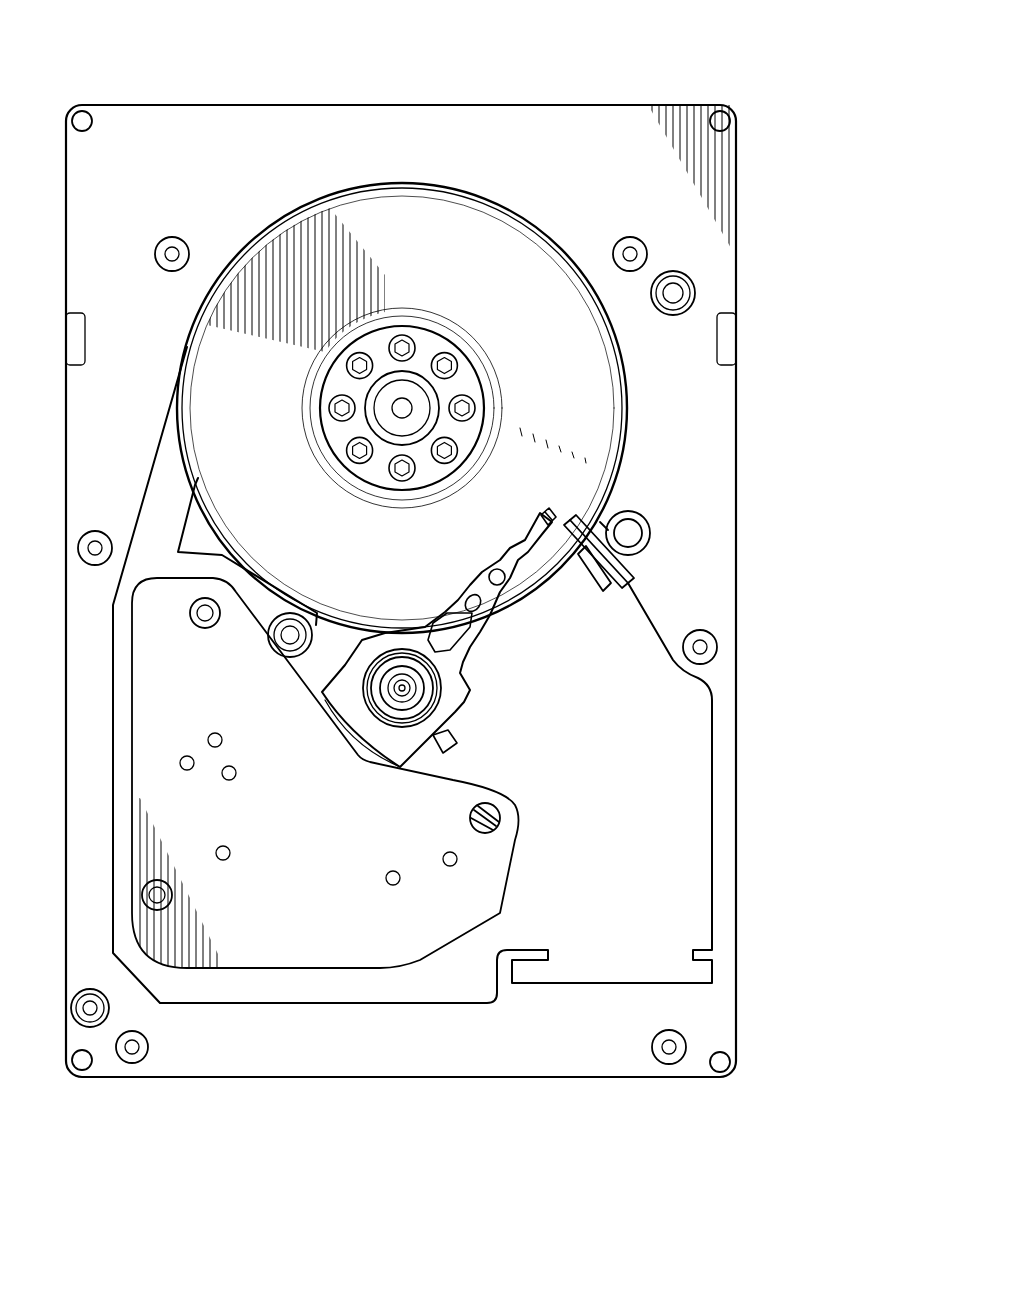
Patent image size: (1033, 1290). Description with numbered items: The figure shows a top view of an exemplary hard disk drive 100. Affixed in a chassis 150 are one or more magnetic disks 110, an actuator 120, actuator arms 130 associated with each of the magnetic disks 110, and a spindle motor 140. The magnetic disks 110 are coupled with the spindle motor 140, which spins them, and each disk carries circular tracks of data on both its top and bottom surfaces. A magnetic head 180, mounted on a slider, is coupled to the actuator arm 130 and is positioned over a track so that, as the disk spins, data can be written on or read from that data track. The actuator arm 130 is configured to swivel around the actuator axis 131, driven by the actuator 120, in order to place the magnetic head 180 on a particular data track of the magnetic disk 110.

The hard disk drive 100 is at (642, 35).
The chassis 150 is at (178, 105).
The magnetic disk 110 is at (488, 240).
The spindle motor 140 is at (412, 400).
The magnetic head 180 is at (543, 515).
The actuator arm 130 is at (482, 585).
The actuator axis 131 is at (410, 695).
The actuator 120 is at (497, 873).